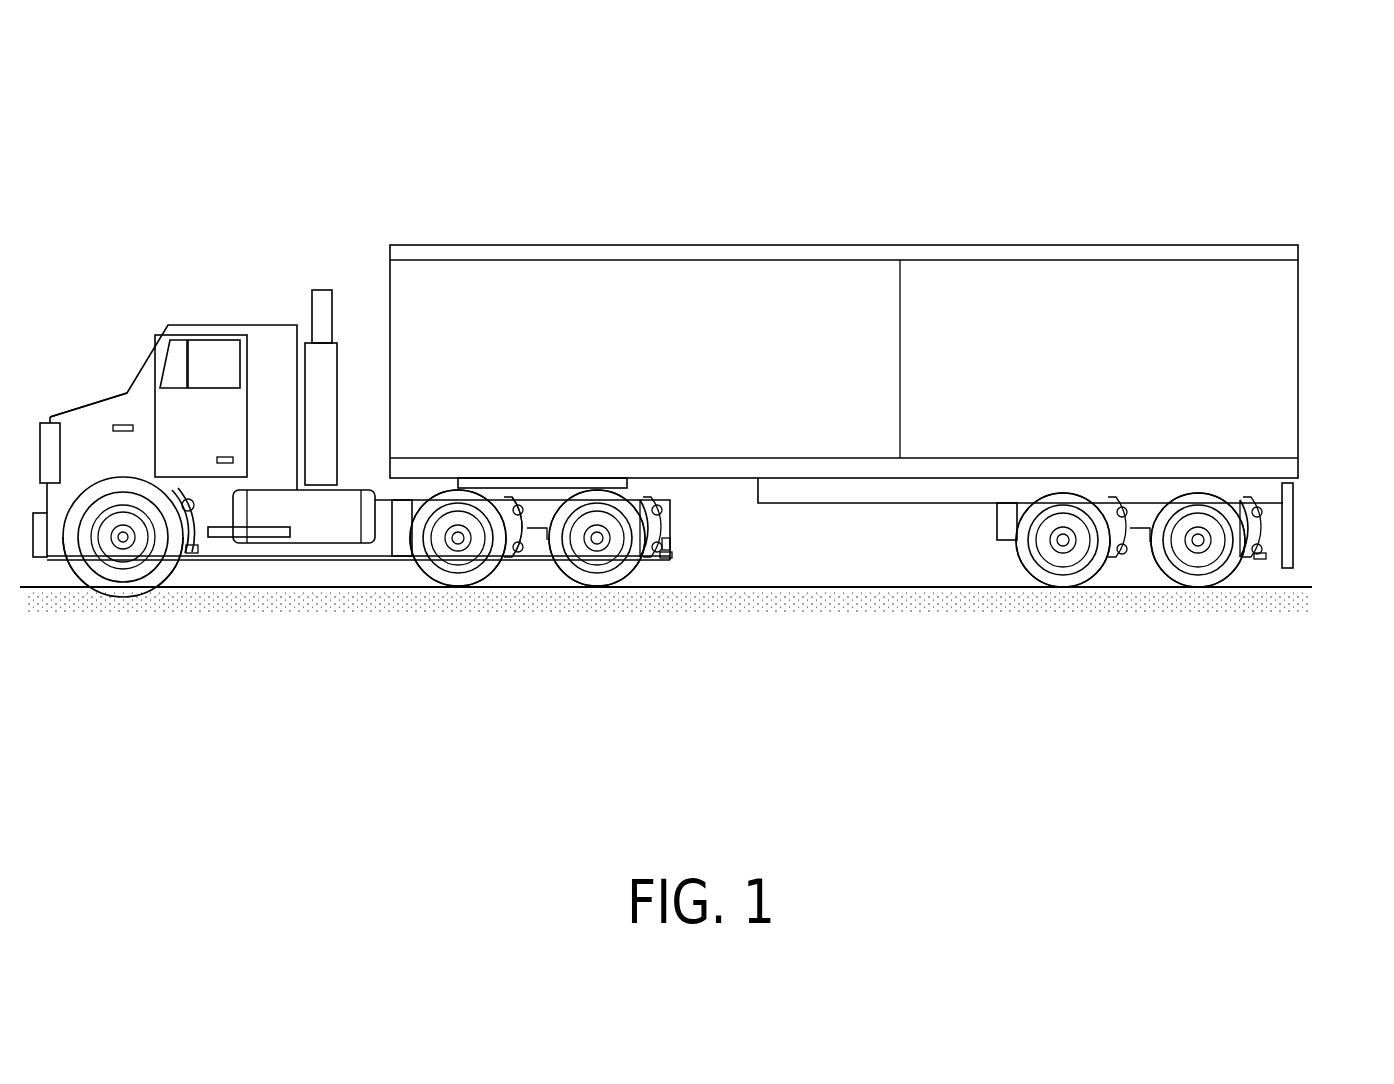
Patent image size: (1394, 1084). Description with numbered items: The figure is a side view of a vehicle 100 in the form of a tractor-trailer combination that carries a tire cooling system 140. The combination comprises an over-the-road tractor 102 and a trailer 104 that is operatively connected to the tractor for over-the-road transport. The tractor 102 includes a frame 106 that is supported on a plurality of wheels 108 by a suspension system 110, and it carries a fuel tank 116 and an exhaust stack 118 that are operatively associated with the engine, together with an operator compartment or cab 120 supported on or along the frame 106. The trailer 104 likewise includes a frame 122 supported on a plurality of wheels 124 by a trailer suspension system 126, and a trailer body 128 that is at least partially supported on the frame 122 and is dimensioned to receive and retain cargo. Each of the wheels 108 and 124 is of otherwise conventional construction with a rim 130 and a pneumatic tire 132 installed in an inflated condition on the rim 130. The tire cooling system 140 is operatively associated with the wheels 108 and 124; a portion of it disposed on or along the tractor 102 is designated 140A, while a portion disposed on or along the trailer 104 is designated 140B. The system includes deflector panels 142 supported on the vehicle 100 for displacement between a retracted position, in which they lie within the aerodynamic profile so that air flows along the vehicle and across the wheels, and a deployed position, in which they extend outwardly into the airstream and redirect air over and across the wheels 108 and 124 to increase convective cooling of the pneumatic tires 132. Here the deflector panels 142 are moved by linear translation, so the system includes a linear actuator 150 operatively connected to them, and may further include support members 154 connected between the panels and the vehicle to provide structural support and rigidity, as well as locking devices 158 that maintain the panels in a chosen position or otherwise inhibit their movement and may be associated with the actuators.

The vehicle 100 is at (323, 185).
The tractor 102 is at (170, 297).
The trailer 104 is at (732, 230).
The frame 106 is at (280, 553).
The wheels 108 is at (490, 572).
The suspension system 110 is at (392, 553).
The fuel tank 116 is at (346, 530).
The exhaust stack 118 is at (316, 310).
The cab 120 is at (120, 408).
The frame 122 is at (892, 490).
The wheels 124 is at (1092, 573).
The trailer suspension system 126 is at (987, 540).
The trailer body 128 is at (912, 287).
The rim 130 is at (108, 555).
The pneumatic tire 132 is at (121, 577).
The tire cooling system 140 is at (782, 633).
The tire cooling system portion 140A is at (523, 482).
The tire cooling system portion 140B is at (1127, 482).
The deflector panel 142 is at (172, 548).
The linear actuator 150 is at (665, 515).
The support member 154 is at (670, 557).
The locking device 158 is at (944, 528).